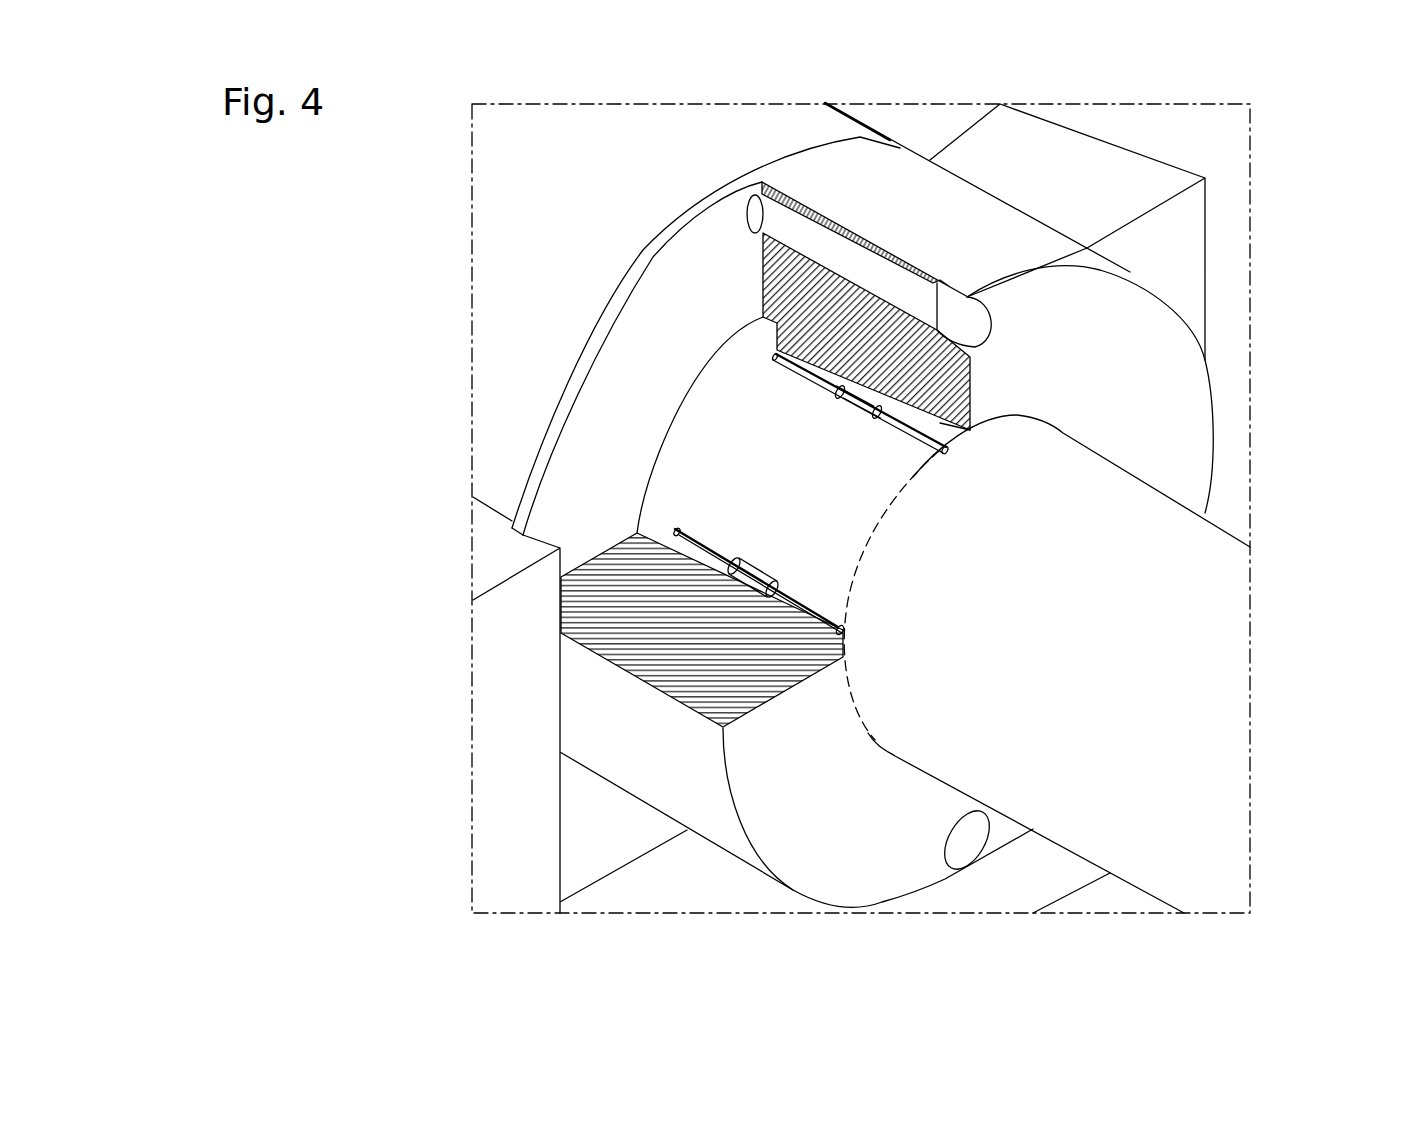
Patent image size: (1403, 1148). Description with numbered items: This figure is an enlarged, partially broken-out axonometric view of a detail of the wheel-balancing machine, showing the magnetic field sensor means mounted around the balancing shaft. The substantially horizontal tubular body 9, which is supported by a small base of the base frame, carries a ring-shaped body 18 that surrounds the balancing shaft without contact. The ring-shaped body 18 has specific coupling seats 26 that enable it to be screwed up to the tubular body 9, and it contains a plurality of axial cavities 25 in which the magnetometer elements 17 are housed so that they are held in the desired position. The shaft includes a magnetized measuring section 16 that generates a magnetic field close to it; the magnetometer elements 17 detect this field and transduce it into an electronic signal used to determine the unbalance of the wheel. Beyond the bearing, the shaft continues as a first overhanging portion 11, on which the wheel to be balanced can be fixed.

The tubular body 9 is at (543, 230).
The first overhanging portion 11 is at (1109, 644).
The measuring section 16 is at (738, 412).
The magnetometer elements 17 is at (759, 578).
The ring-shaped body 18 is at (1120, 407).
The axial cavities 25 is at (685, 538).
The coupling seats 26 is at (873, 278).